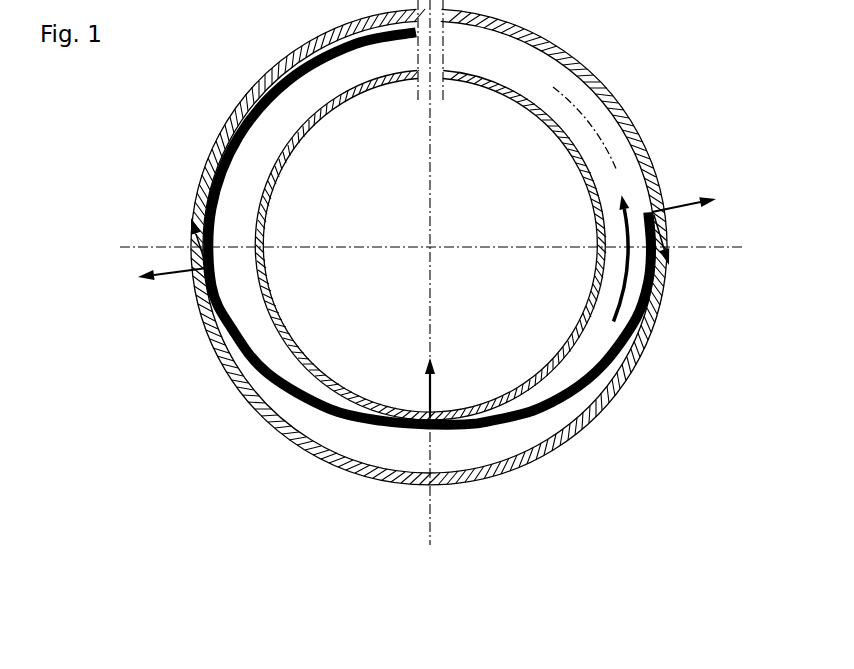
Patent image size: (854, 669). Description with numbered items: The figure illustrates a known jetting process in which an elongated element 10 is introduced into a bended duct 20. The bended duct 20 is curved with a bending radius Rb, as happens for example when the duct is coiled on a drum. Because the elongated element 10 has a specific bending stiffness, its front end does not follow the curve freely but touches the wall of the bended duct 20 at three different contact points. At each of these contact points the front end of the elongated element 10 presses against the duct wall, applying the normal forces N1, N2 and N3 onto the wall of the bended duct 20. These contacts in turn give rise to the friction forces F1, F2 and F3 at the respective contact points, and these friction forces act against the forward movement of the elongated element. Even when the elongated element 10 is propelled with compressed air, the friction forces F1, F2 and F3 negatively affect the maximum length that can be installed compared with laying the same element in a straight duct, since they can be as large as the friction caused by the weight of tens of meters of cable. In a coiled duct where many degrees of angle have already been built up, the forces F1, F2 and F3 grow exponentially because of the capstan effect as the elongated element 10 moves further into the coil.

The elongated element 10 is at (217, 152).
The bended duct 20 is at (243, 396).
The normal force N1 is at (684, 191).
The friction force F1 is at (684, 240).
The normal force N2 is at (448, 388).
The friction force F2 is at (386, 439).
The normal force N3 is at (161, 293).
The friction force F3 is at (174, 236).
The bending radius Rb is at (588, 133).